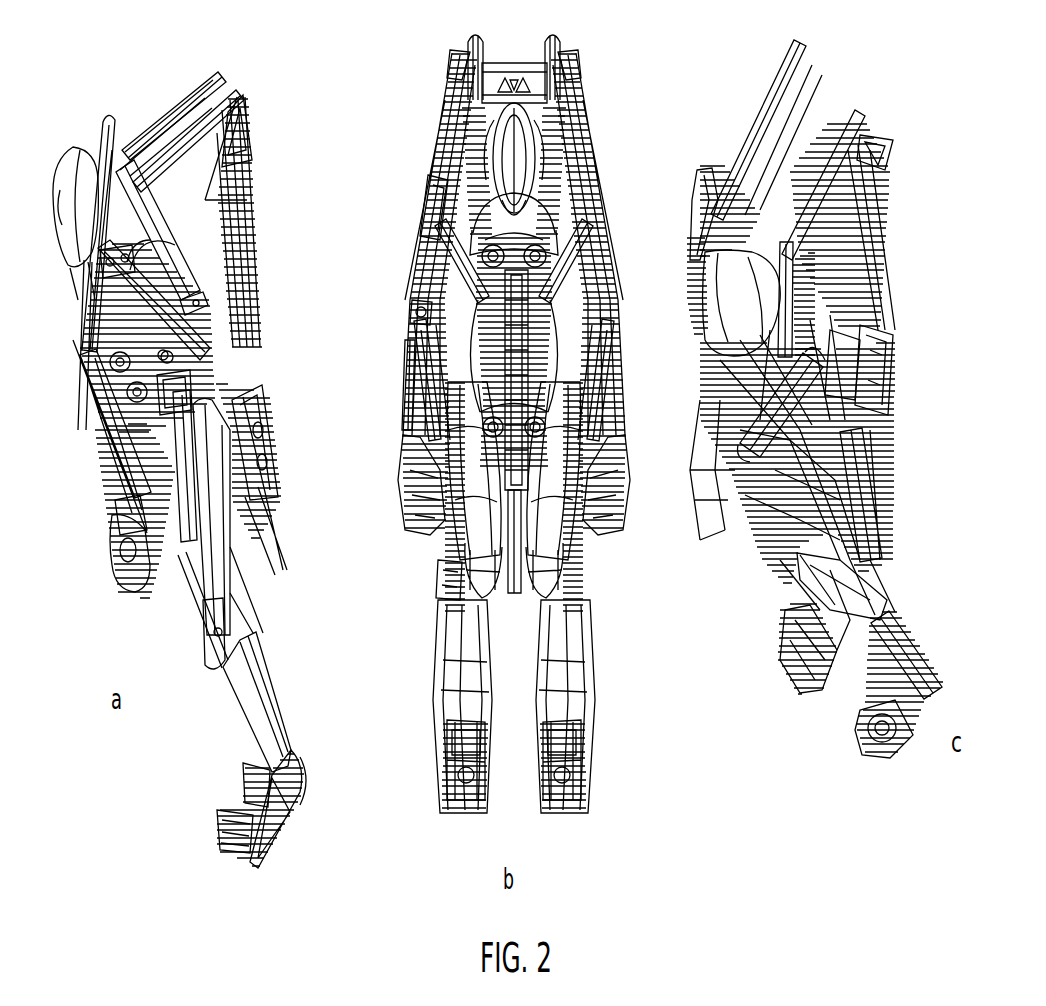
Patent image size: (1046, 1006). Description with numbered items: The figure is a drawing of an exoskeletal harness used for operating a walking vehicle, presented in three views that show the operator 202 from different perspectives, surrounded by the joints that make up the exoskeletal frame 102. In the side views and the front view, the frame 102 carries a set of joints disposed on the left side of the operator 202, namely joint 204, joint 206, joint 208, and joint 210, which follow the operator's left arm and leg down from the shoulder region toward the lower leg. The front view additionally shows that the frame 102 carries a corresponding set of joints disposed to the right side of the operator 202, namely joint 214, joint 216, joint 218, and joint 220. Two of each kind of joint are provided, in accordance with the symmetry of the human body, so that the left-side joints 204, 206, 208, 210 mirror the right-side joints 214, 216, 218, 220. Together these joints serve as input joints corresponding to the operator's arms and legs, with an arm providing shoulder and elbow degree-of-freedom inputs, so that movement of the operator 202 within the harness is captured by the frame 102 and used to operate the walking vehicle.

The frame 102 is at (96, 588).
The operator 202 is at (80, 145).
The joint 204 is at (137, 260).
The joint 206 is at (175, 357).
The joint 208 is at (253, 398).
The joint 210 is at (234, 634).
The joint 214 is at (430, 222).
The joint 216 is at (414, 306).
The joint 218 is at (397, 372).
The joint 220 is at (434, 583).